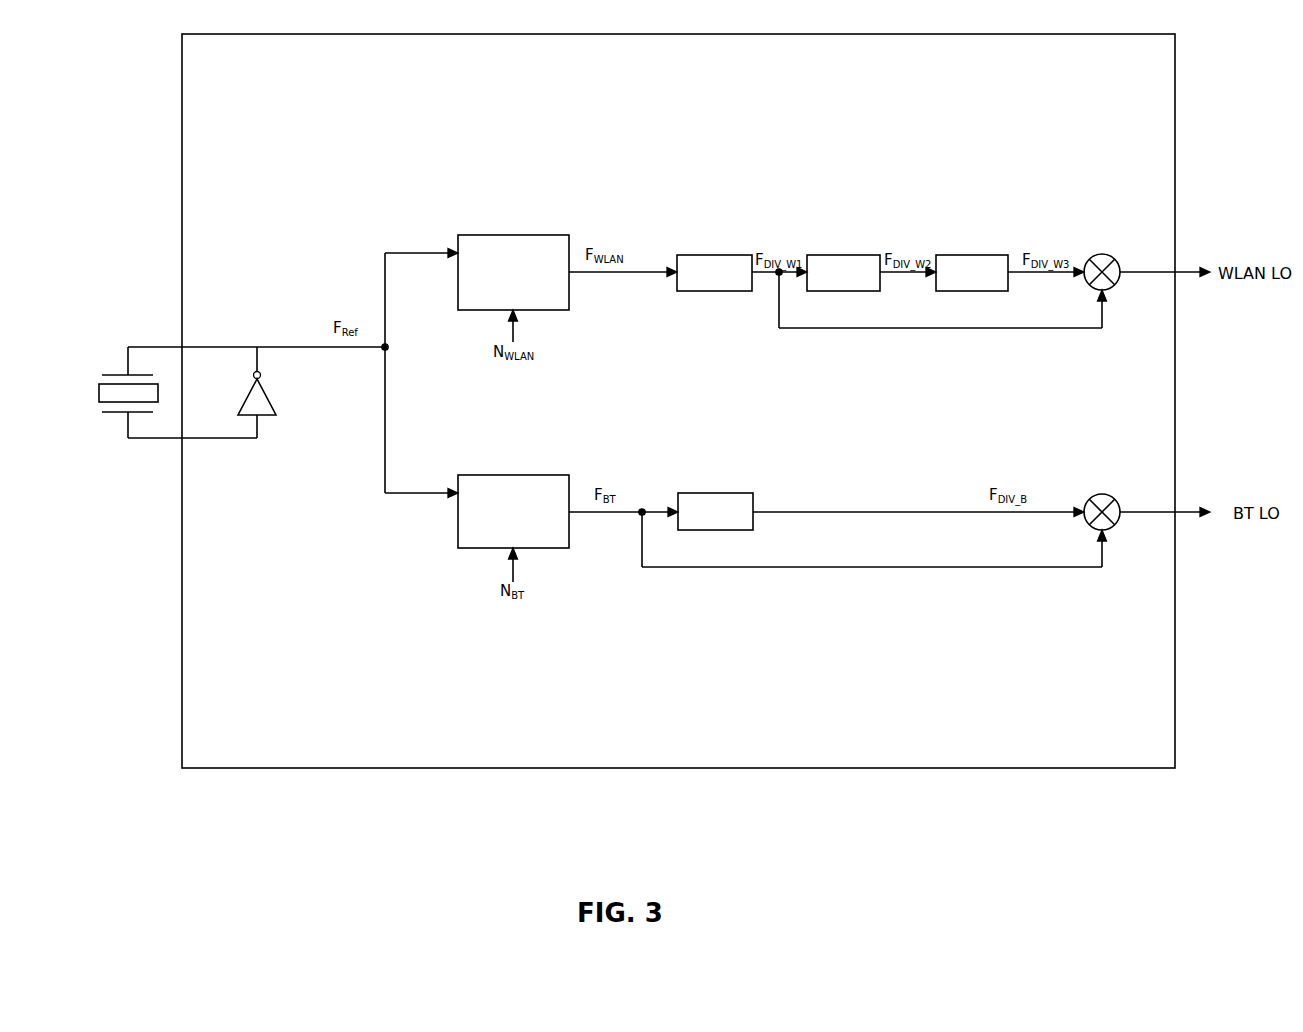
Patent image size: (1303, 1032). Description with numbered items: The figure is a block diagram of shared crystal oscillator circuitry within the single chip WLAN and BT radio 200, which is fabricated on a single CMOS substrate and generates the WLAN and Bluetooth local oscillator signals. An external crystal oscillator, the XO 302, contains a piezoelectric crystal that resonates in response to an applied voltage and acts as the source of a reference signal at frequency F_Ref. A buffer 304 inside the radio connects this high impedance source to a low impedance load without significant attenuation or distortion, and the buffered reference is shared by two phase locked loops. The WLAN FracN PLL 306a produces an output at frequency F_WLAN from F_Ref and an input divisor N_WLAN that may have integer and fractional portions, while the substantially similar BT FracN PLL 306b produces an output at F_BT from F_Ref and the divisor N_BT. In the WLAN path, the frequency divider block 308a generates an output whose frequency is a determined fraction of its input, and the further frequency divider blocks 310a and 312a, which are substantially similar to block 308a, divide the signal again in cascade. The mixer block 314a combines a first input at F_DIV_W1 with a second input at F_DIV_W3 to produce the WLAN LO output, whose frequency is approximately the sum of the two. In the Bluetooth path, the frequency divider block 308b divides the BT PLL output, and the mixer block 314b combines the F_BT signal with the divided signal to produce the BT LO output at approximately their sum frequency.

The single chip WLAN and BT radio 200 is at (1175, 622).
The XO 302 is at (100, 380).
The buffer 304 is at (266, 399).
The WLAN fractional-N phase locked loop 306a is at (513, 272).
The BT FracN PLL 306b is at (513, 511).
The frequency divider block 308a is at (718, 255).
The frequency divider block 310a is at (847, 255).
The frequency divider block 312a is at (976, 255).
The mixer block 314a is at (1105, 256).
The frequency divider block 308b is at (719, 493).
The mixer block 314b is at (1105, 494).